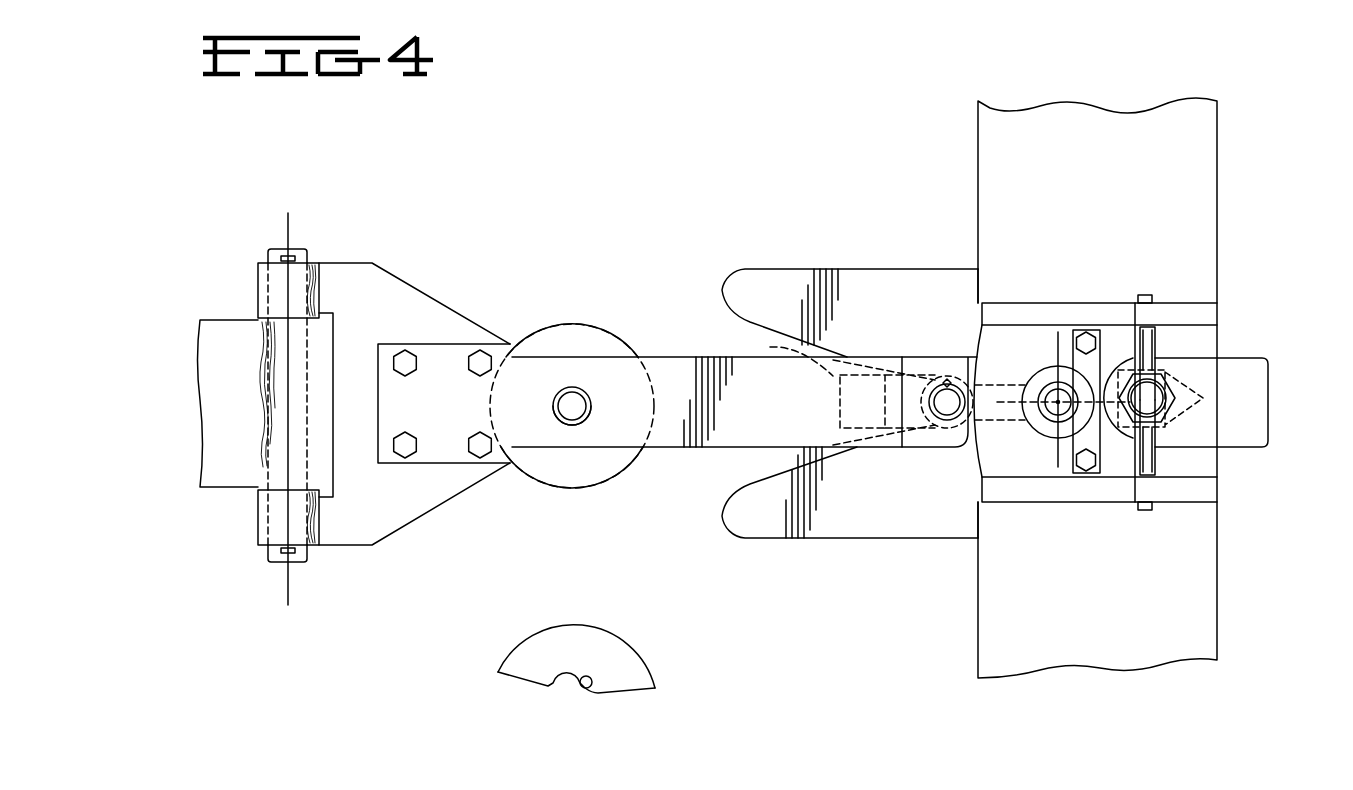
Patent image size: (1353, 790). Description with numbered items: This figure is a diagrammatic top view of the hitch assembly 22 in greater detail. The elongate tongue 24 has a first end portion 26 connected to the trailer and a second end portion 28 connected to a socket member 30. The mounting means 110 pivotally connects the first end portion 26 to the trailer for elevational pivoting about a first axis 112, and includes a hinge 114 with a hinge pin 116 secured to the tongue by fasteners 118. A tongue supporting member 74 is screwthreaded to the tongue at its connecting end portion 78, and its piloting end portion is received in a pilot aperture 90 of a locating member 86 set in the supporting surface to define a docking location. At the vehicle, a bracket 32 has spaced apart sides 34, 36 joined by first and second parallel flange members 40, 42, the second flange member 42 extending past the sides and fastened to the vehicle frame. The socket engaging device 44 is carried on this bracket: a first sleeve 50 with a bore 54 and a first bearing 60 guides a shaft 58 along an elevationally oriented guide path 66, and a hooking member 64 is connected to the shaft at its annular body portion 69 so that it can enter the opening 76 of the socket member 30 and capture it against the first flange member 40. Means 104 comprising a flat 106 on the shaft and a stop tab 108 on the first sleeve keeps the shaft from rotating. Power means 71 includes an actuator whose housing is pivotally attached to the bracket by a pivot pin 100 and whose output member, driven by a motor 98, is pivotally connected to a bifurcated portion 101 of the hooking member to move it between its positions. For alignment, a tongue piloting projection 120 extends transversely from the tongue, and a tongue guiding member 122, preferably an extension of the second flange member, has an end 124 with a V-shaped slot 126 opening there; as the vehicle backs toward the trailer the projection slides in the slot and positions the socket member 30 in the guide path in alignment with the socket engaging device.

The hitch assembly 22 is at (685, 145).
The tongue 24 is at (684, 398).
The first end portion 26 is at (405, 395).
The second end portion 28 is at (855, 400).
The socket member 30 is at (932, 358).
The bracket 32 is at (1225, 458).
The first side 34 is at (1210, 306).
The second side 36 is at (1220, 492).
The first flange member 40 is at (1210, 346).
The second flange member 42 is at (1208, 176).
The socket engaging device 44 is at (1048, 460).
The first sleeve 50 is at (1030, 350).
The bore 54 is at (1036, 388).
The shaft 58 is at (1050, 418).
The first bearing 60 is at (1040, 422).
The hooking member 64 is at (940, 425).
The guide path 66 is at (1060, 405).
The annular body portion 69 is at (1043, 382).
The power means 71 is at (1278, 391).
The tongue supporting member 74 is at (578, 393).
The opening 76 is at (945, 383).
The connecting end portion 78 is at (590, 423).
The locating member 86 is at (553, 325).
The pilot aperture 90 is at (592, 680).
The motor 98 is at (1272, 418).
The pivot pin 100 is at (1150, 452).
The bifurcated portion 101 is at (1183, 398).
The means for maintaining the shaft from rotation 104 is at (1099, 346).
The flat 106 is at (1158, 374).
The stop tab 108 is at (1080, 476).
The mounting means 110 is at (417, 258).
The first axis 112 is at (290, 222).
The hinge 114 is at (395, 300).
The hinge pin 116 is at (310, 551).
The fasteners 118 is at (480, 352).
The tongue piloting projection 120 is at (770, 347).
The tongue guiding member 122 is at (838, 540).
The end 124 is at (719, 294).
The slot 126 is at (735, 477).